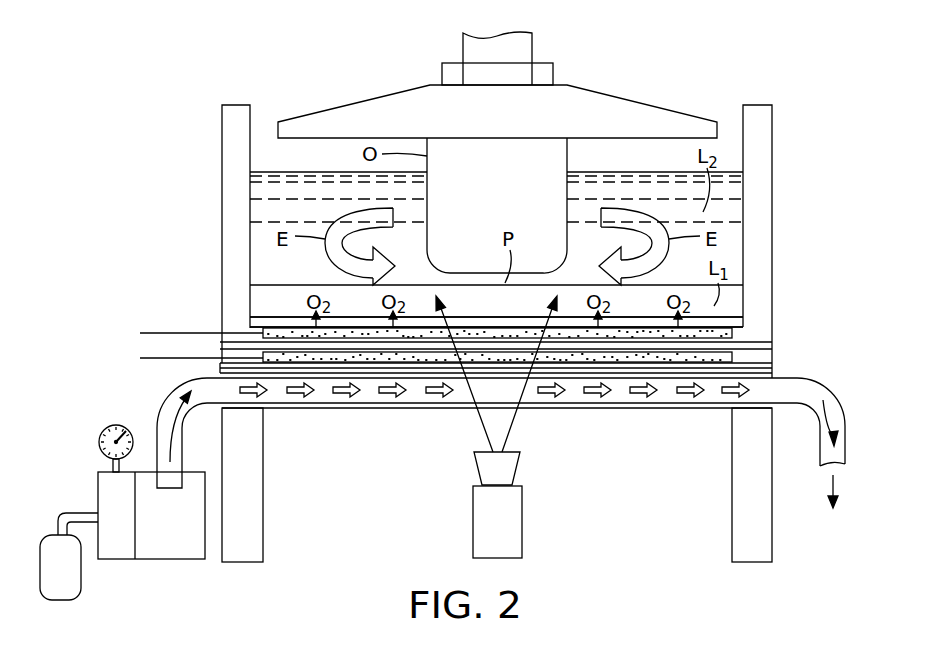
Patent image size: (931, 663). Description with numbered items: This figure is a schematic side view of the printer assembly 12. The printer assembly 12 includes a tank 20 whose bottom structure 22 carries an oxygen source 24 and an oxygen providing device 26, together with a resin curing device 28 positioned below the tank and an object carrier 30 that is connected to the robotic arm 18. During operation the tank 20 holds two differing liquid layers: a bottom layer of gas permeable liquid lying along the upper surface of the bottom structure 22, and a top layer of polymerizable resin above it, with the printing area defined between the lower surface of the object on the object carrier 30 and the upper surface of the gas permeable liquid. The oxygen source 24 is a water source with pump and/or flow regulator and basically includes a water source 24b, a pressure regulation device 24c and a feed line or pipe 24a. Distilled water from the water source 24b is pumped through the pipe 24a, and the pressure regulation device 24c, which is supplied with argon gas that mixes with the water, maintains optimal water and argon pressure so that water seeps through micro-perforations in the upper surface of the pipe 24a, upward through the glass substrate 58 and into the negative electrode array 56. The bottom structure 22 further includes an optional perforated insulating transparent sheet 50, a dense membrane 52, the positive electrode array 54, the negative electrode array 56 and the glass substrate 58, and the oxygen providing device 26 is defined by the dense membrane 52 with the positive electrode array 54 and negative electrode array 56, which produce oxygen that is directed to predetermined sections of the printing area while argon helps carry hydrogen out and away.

The printer assembly 12 is at (539, 286).
The robotic arm 18 is at (463, 50).
The tank 20 is at (778, 207).
The bottom structure 22 is at (220, 340).
The oxygen source 24 is at (122, 496).
The feed line or pipe 24a is at (272, 378).
The water source 24b is at (168, 560).
The pressure regulation device 24c is at (115, 560).
The oxygen providing device 26 is at (559, 327).
The resin curing device 28 is at (510, 533).
The object carrier 30 is at (338, 106).
The perforated insulating transparent sheet 50 is at (280, 325).
The dense membrane 52 is at (772, 343).
The positive electrode array 54 is at (733, 335).
The negative electrode array 56 is at (733, 360).
The glass substrate 58 is at (536, 367).